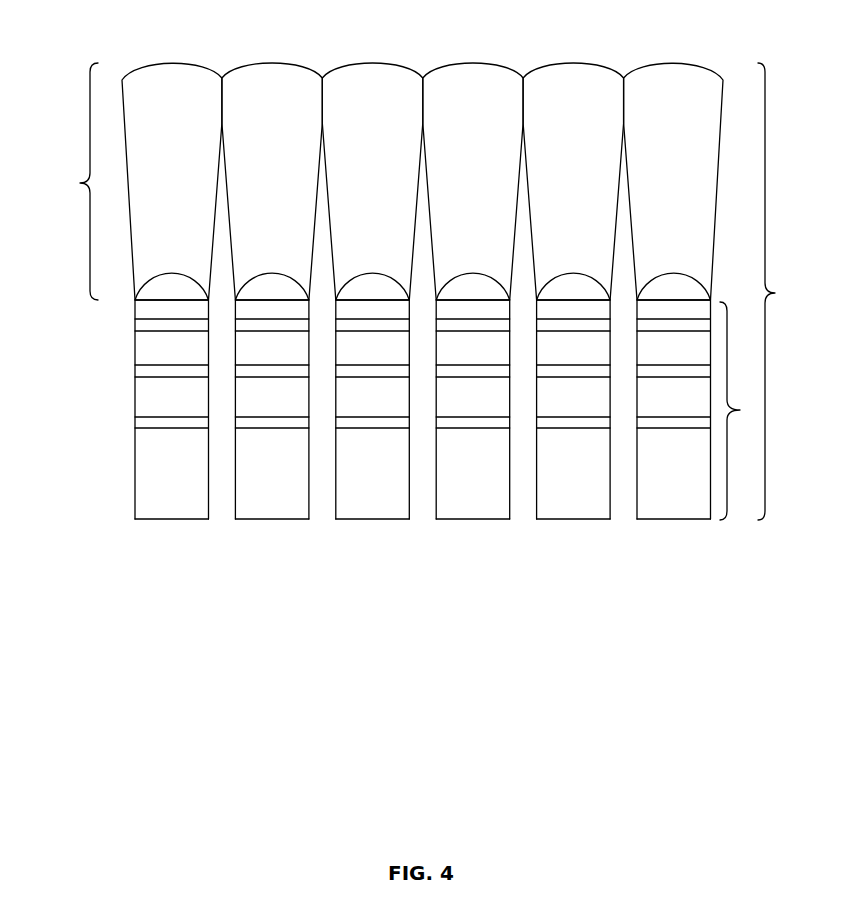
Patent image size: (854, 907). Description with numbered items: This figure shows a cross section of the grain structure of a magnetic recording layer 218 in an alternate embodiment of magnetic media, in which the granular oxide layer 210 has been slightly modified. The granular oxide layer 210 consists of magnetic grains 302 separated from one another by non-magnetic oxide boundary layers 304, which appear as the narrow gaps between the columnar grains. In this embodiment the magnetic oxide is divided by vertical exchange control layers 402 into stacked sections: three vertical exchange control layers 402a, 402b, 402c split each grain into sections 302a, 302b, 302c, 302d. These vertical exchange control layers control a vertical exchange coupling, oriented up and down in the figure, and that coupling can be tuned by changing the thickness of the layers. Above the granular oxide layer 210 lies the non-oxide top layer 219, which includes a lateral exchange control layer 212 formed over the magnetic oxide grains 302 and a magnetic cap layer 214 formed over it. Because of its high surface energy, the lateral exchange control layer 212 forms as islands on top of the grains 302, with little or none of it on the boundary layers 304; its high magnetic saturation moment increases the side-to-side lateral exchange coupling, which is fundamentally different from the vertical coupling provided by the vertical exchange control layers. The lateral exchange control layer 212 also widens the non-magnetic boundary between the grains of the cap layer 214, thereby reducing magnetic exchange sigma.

The vertical exchange control layers 402 is at (363, 58).
The magnetic cap layer 214 is at (194, 174).
The lateral exchange control layer 212 is at (182, 293).
The non-oxide top layer 219 is at (87, 80).
The magnetic recording layer 218 is at (760, 70).
The granular oxide layer 210 is at (724, 523).
The magnetic grains 302 is at (173, 514).
The non-magnetic oxide boundary layers 304 is at (223, 514).
The magnetic oxide section 302a is at (145, 492).
The vertical exchange control layer 402a is at (140, 423).
The magnetic oxide section 302b is at (145, 397).
The vertical exchange control layer 402b is at (145, 371).
The magnetic oxide section 302c is at (145, 348).
The vertical exchange control layer 402c is at (145, 325).
The magnetic oxide section 302d is at (145, 310).